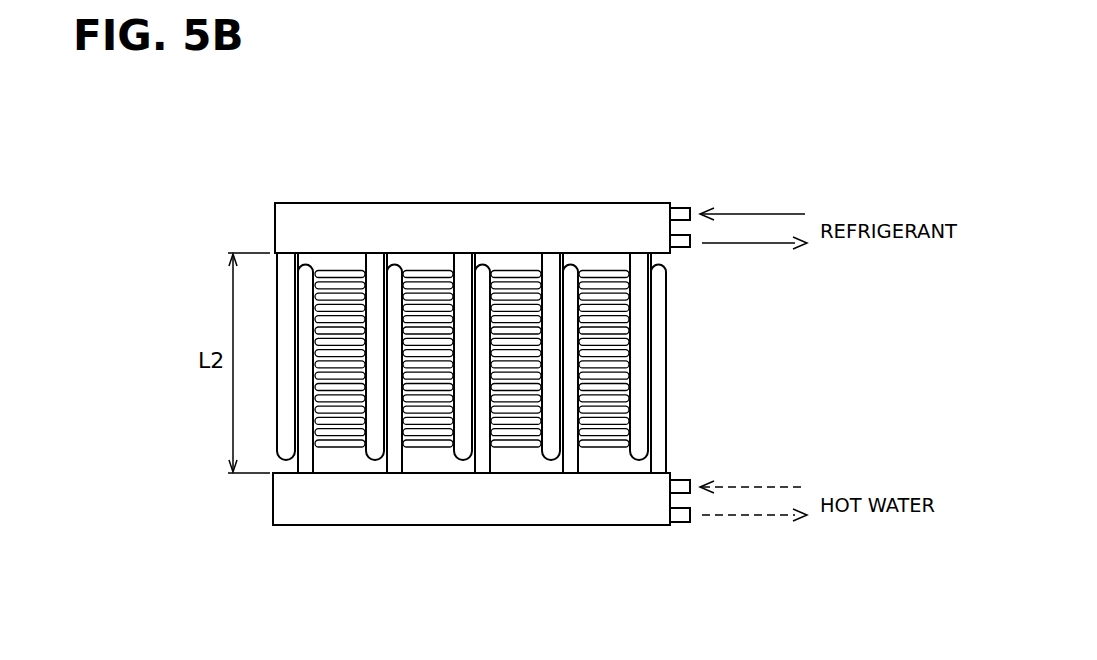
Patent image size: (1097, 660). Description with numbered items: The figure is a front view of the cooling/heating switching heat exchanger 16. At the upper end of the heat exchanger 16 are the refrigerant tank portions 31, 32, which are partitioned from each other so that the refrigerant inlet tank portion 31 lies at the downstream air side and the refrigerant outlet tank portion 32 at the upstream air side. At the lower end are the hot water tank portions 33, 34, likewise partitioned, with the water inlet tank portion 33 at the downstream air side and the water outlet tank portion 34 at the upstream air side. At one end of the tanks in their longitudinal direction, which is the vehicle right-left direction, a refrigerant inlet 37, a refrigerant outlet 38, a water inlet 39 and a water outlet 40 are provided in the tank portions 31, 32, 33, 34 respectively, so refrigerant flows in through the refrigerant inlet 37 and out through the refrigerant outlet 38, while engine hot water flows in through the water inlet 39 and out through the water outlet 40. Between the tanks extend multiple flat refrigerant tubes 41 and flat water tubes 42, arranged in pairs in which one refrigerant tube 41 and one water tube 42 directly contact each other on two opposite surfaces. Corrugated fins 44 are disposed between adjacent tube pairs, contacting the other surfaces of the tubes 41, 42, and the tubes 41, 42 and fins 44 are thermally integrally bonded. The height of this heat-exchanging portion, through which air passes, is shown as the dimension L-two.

The cooling/heating switching heat exchanger 16 is at (510, 371).
The refrigerant inlet tank portion 31 is at (472, 190).
The refrigerant outlet tank portion 32 is at (487, 216).
The water inlet tank portion 33 is at (471, 544).
The water outlet tank portion 34 is at (500, 510).
The refrigerant inlet 37 is at (690, 211).
The refrigerant outlet 38 is at (690, 246).
The water inlet 39 is at (690, 482).
The water outlet 40 is at (690, 520).
The refrigerant tube 41 is at (287, 263).
The water tube 42 is at (659, 445).
The corrugated fin 44 is at (340, 455).